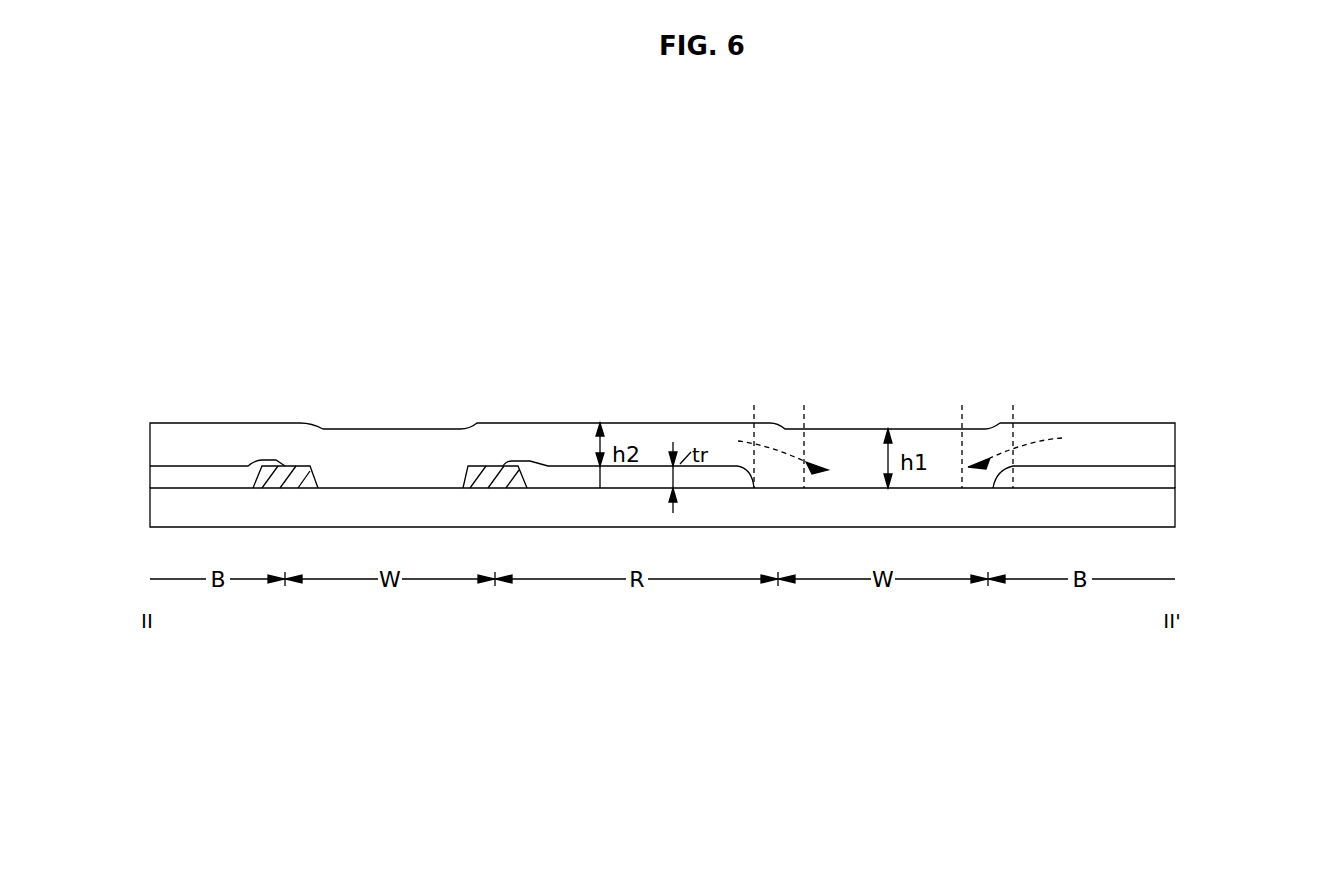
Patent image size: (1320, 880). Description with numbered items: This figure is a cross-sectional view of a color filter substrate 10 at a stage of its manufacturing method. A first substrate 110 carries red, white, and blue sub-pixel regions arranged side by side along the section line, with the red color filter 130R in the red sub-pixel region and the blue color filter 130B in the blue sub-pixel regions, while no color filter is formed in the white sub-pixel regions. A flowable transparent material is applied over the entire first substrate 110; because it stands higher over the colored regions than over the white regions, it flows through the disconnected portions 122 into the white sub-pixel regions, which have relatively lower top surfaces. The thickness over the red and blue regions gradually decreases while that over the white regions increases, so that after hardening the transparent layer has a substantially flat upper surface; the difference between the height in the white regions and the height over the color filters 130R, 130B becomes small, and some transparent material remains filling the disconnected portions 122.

The color filter substrate 10 is at (1215, 422).
The first substrate 110 is at (1165, 508).
The disconnected portions 122 is at (792, 431).
The blue color filter 130B is at (194, 476).
The red color filter 130R is at (546, 476).